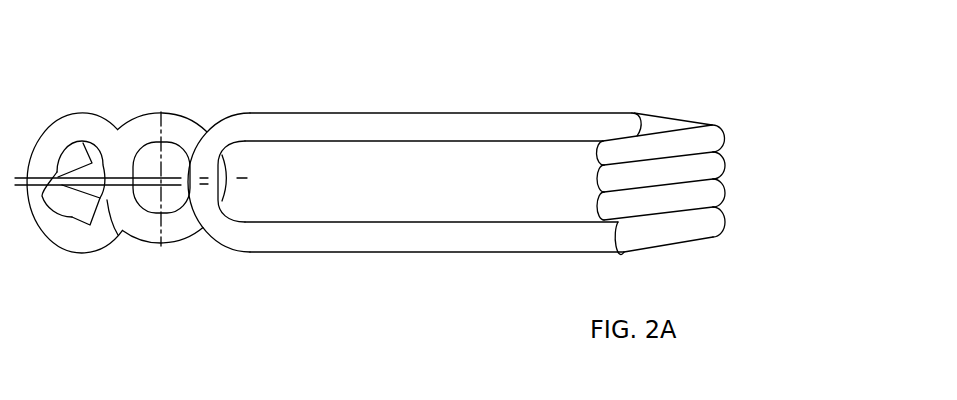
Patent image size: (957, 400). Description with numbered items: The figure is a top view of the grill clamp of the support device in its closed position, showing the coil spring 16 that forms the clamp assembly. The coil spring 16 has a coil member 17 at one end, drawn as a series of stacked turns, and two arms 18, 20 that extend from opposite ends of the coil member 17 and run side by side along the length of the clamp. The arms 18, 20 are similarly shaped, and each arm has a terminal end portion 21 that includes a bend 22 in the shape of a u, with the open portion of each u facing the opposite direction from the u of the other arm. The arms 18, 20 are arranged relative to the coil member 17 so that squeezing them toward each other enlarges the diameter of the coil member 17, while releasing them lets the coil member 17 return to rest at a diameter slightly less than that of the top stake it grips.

The coil spring 16 is at (177, 300).
The coil member 17 is at (681, 84).
The arm 18 is at (425, 128).
The arm 20 is at (422, 240).
The terminal end portion 21 is at (201, 106).
The bend 22 is at (143, 132).